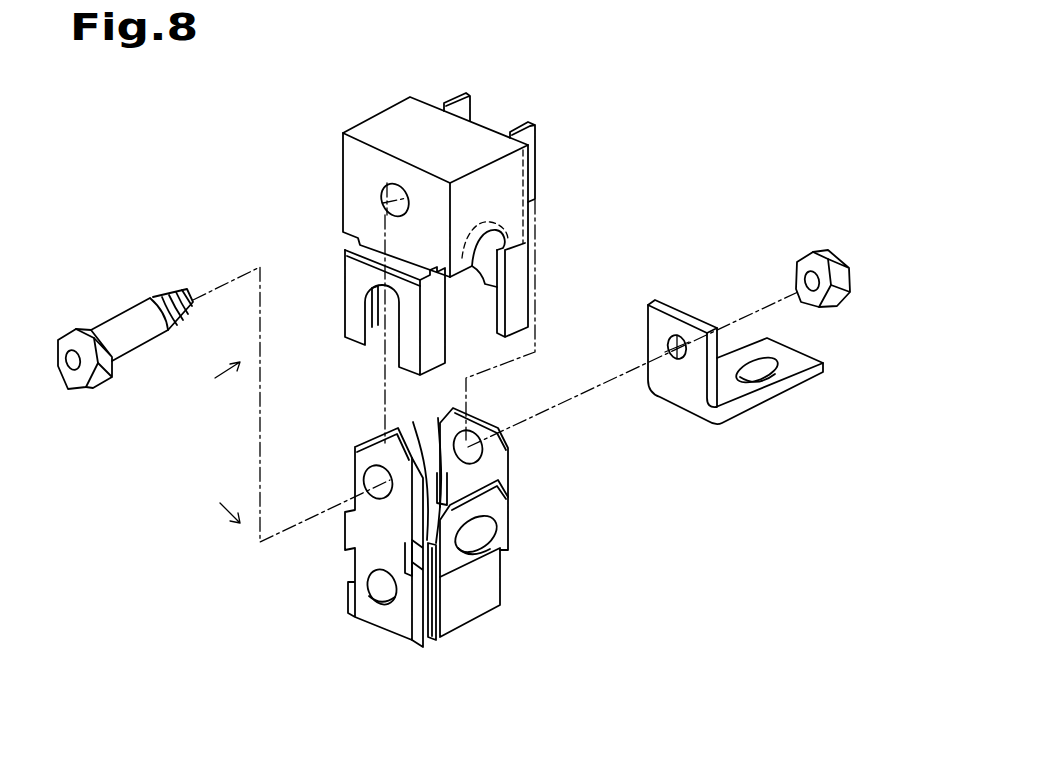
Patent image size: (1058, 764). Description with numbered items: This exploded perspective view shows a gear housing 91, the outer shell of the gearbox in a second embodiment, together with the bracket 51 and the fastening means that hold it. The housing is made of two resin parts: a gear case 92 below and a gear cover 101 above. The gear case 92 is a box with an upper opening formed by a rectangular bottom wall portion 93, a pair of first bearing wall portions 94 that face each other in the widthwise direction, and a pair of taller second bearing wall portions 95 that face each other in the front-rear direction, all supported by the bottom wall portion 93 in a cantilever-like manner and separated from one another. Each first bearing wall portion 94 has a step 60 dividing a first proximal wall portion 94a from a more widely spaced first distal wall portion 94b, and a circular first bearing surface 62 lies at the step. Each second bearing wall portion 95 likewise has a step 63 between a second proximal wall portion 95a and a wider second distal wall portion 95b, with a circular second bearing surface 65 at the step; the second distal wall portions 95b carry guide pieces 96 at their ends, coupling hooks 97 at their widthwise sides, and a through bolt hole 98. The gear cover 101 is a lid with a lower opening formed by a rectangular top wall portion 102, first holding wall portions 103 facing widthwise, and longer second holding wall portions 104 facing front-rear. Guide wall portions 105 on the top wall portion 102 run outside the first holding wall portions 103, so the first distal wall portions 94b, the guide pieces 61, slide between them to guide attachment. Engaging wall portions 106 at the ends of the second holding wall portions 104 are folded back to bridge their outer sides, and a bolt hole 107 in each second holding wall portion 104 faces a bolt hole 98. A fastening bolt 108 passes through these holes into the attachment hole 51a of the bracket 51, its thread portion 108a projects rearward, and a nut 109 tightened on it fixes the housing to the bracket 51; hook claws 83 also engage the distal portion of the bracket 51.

The bracket 51 is at (754, 345).
The attachment hole 51a is at (675, 336).
The step 60 is at (437, 537).
The guide piece 61 is at (382, 433).
The first bearing surface 62 is at (480, 600).
The step 63 is at (431, 620).
The second bearing surface 65 is at (375, 590).
The hook claw 83 is at (450, 97).
The gear housing 91 is at (165, 397).
The gear case 92 is at (209, 499).
The bottom wall portion 93 is at (432, 638).
The first bearing wall portion 94 is at (510, 542).
The first proximal wall portion 94a is at (466, 620).
The first distal wall portion 94b is at (510, 524).
The second bearing wall portion 95 is at (422, 526).
The second proximal wall portion 95a is at (364, 612).
The second distal wall portion 95b is at (352, 552).
The guide piece 96 is at (352, 450).
The coupling hook 97 is at (406, 562).
The bolt hole 98 is at (366, 482).
The gear cover 101 is at (209, 389).
The top wall portion 102 is at (437, 196).
The first holding wall portion 103 is at (530, 187).
The second holding wall portion 104 is at (500, 104).
The guide wall portion 105 is at (515, 165).
The engaging wall portion 106 is at (353, 280).
The bolt hole 107 is at (382, 196).
The fastening bolt 108 is at (112, 330).
The thread portion 108a is at (168, 293).
The nut 109 is at (817, 250).